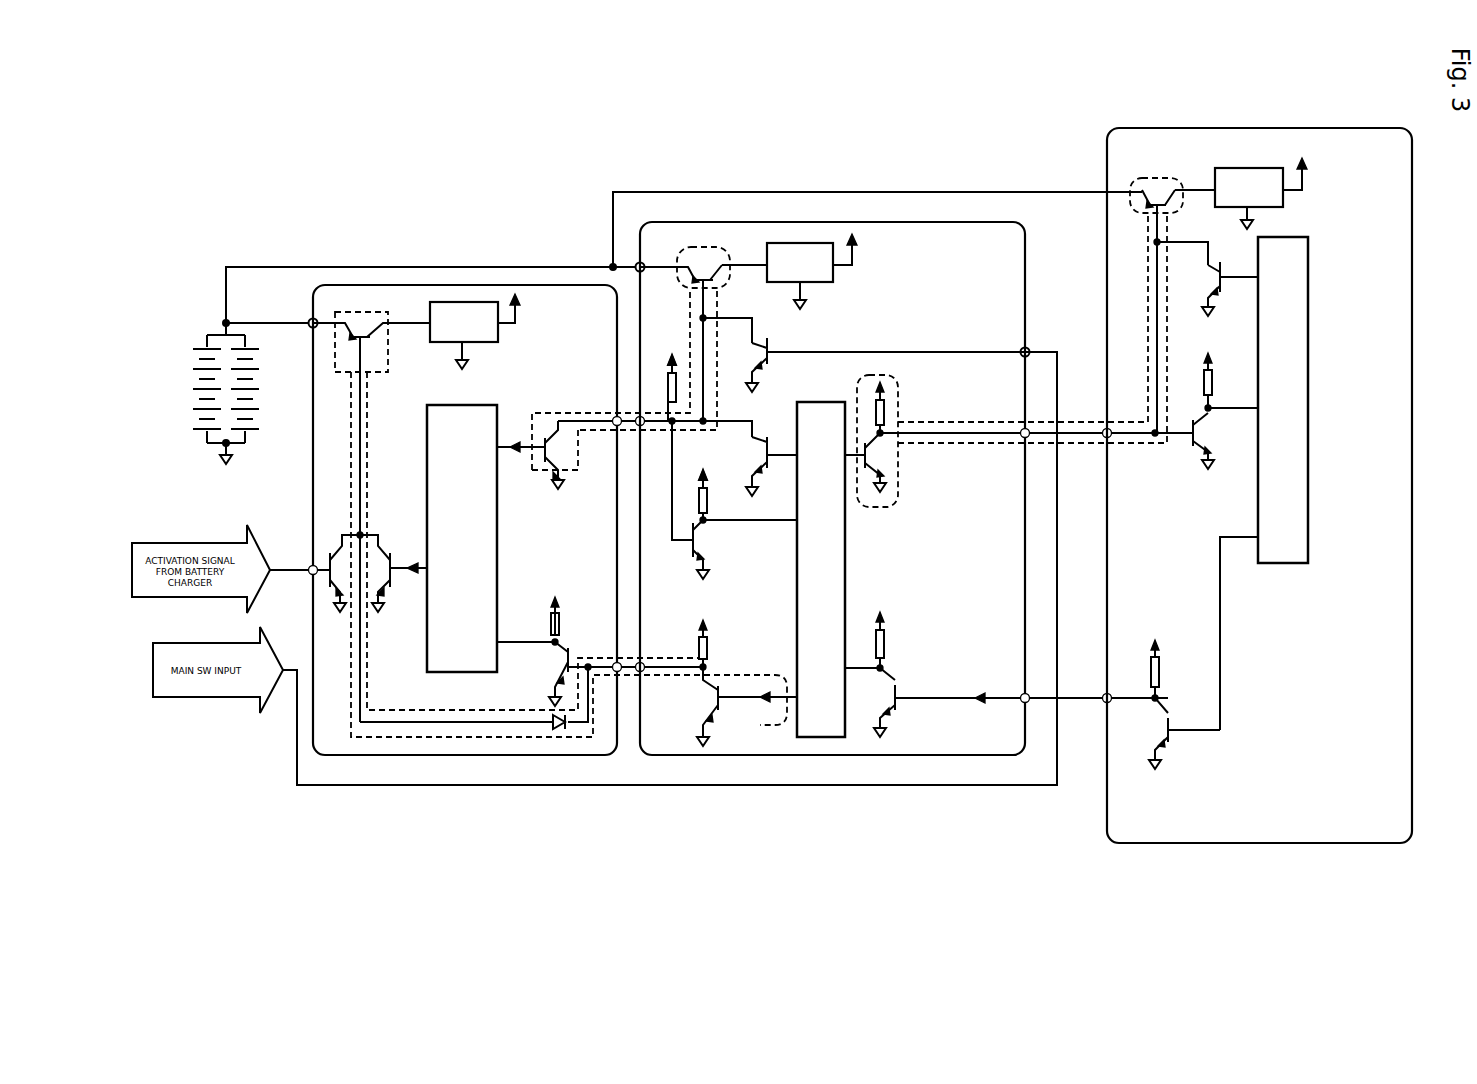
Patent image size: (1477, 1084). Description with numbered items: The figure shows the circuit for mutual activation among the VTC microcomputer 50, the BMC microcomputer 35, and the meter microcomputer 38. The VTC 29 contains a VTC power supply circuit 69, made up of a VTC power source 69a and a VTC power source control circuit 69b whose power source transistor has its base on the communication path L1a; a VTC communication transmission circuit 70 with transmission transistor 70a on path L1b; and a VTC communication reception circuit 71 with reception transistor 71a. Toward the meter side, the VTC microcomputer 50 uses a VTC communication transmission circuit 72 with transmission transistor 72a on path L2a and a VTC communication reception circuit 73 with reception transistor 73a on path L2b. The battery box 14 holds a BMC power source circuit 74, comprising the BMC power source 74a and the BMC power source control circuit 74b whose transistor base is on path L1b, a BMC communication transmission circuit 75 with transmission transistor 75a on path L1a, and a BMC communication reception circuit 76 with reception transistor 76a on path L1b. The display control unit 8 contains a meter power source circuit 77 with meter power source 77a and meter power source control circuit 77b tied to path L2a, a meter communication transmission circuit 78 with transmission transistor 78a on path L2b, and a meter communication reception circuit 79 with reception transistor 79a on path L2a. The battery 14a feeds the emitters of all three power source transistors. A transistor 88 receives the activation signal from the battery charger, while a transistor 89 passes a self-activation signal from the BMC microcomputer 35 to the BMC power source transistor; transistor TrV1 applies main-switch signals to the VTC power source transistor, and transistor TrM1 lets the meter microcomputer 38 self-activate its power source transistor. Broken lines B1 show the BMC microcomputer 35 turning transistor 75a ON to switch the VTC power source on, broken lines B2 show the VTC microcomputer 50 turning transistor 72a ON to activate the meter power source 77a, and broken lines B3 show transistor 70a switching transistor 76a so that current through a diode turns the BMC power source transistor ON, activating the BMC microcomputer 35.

The display control unit 8 is at (1107, 812).
The battery box 14 is at (480, 757).
The battery 14a is at (182, 392).
The VTC 29 is at (825, 757).
The BMC microcomputer 35 is at (470, 405).
The meter microcomputer 38 is at (1308, 390).
The VTC microcomputer 50 is at (845, 578).
The VTC power supply circuit 69 is at (866, 245).
The VTC power source 69a is at (835, 278).
The VTC power source control circuit 69b is at (753, 236).
The VTC communication transmission circuit 70 is at (723, 718).
The transmission transistor 70a is at (710, 748).
The VTC communication reception circuit 71 is at (723, 478).
The reception transistor 71a is at (708, 546).
The VTC communication transmission circuit 72 is at (894, 437).
The transmission transistor 72a is at (860, 402).
The VTC communication reception circuit 73 is at (916, 727).
The reception transistor 73a is at (905, 712).
The BMC power source circuit 74 is at (530, 304).
The BMC power source 74a is at (462, 302).
The BMC power source control circuit 74b is at (345, 285).
The BMC communication transmission circuit 75 is at (552, 450).
The transmission transistor 75a is at (543, 437).
The BMC communication reception circuit 76 is at (547, 624).
The reception transistor 76a is at (565, 665).
The meter power source circuit 77 is at (1252, 249).
The meter power source 77a is at (1285, 203).
The meter power source control circuit 77b is at (1161, 152).
The meter communication transmission circuit 78 is at (1194, 700).
The transmission transistor 78a is at (1168, 716).
The meter communication reception circuit 79 is at (1193, 412).
The reception transistor 79a is at (1205, 380).
The transistor 88 is at (325, 556).
The transistor 89 is at (388, 592).
The broken lines B1 is at (680, 290).
The broken lines B2 is at (1092, 440).
The broken lines B3 is at (760, 745).
The first communication path system L1a is at (614, 416).
The first communication path system L1b is at (625, 757).
The second communication path system L2a is at (1080, 428).
The second communication path system L2b is at (1083, 702).
The transistor V1 TrV1 is at (880, 355).
The transistor M1 TrM1 is at (1207, 279).